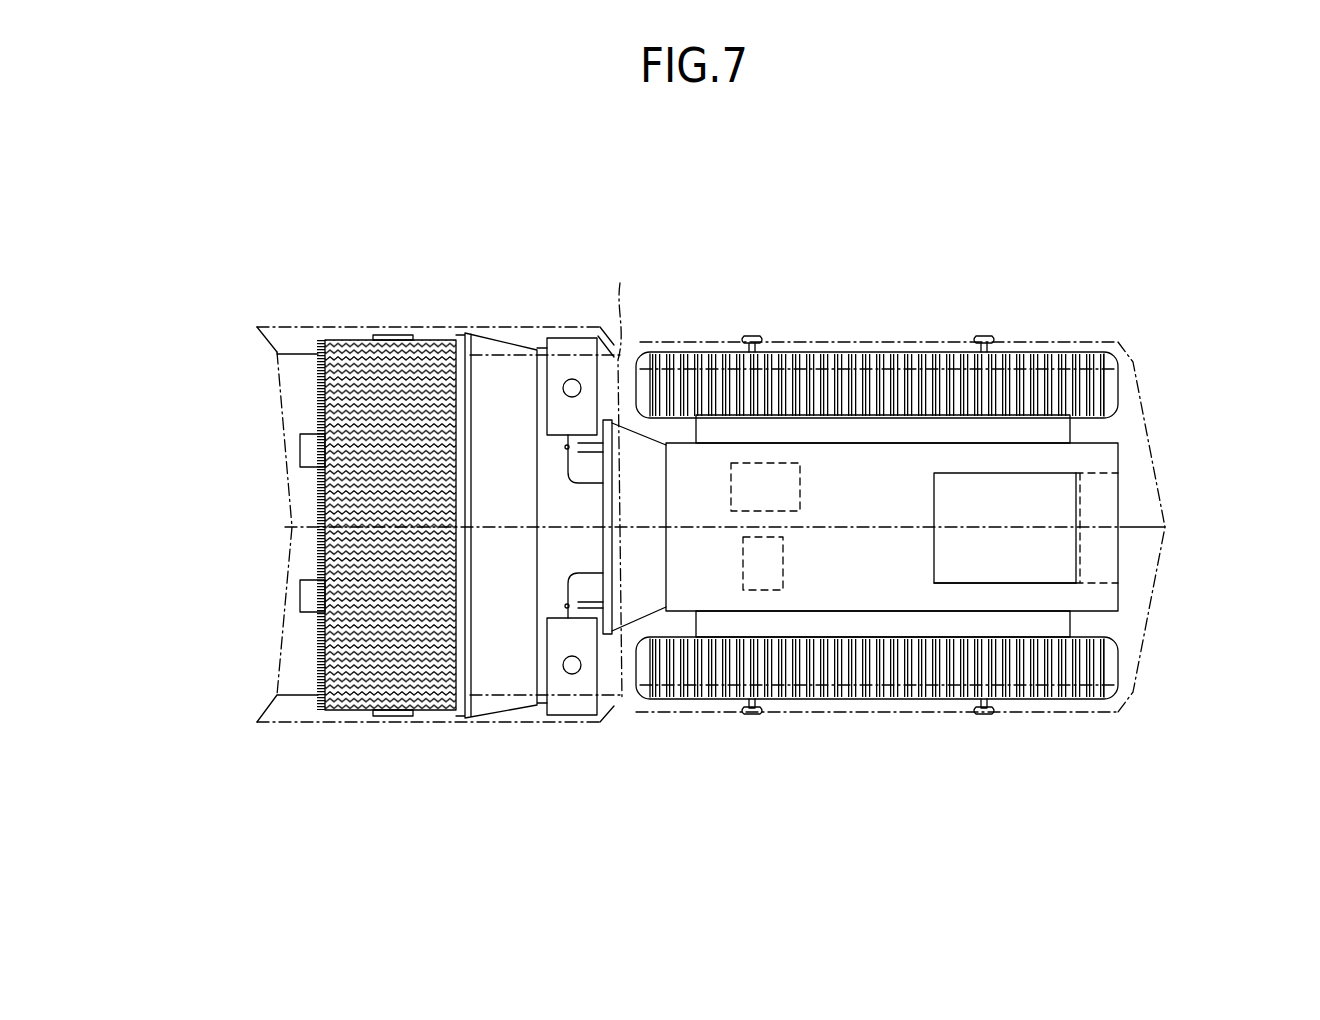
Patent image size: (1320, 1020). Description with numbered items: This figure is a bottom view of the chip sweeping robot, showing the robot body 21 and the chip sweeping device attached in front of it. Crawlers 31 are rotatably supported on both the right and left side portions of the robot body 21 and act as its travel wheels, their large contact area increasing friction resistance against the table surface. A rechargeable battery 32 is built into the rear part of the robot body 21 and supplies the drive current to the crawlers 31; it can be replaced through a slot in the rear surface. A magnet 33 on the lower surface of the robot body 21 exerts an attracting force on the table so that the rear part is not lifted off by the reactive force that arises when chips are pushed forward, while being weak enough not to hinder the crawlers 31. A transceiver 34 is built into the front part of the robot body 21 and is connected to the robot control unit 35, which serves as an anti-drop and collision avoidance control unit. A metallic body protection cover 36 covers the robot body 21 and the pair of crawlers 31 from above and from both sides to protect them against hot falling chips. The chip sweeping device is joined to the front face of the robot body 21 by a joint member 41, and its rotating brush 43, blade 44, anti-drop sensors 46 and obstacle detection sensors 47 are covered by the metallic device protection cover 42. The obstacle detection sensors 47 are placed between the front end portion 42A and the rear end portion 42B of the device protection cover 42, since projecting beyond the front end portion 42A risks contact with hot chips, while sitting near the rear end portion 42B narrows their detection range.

The robot body 21 is at (1100, 458).
The crawlers 31 is at (1030, 352).
The rechargeable battery 32 is at (1105, 505).
The magnet 33 is at (965, 583).
The transceiver 34 is at (768, 590).
The robot control unit 35 is at (790, 463).
The body protection cover 36 is at (1145, 637).
The joint member 41 is at (634, 605).
The device protection cover 42 is at (370, 327).
The front end portion 42A is at (282, 388).
The rear end portion 42B is at (622, 476).
The rotating brush 43 is at (397, 717).
The blade 44 is at (503, 705).
The anti-drop sensors 46 is at (578, 338).
The obstacle detection sensors 47 is at (300, 448).